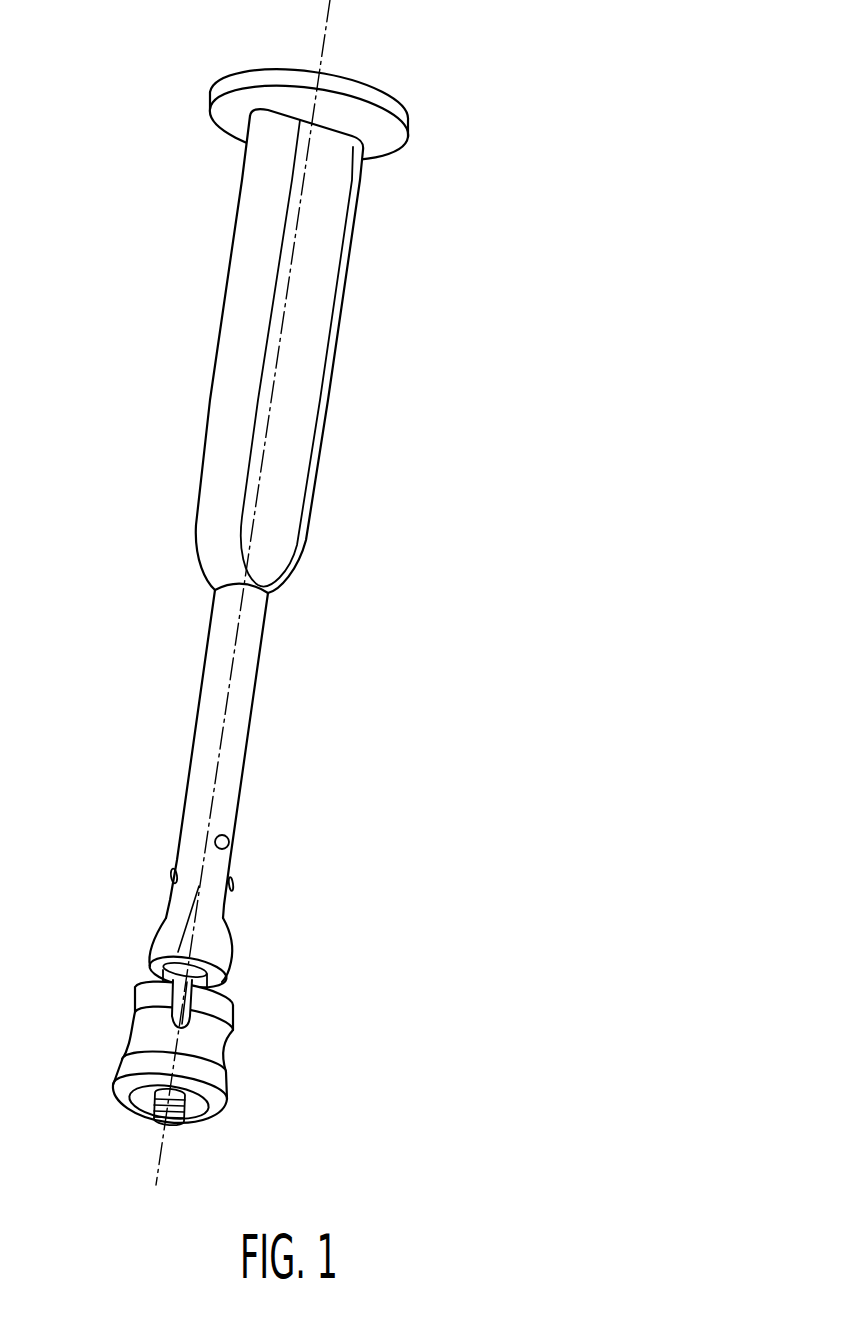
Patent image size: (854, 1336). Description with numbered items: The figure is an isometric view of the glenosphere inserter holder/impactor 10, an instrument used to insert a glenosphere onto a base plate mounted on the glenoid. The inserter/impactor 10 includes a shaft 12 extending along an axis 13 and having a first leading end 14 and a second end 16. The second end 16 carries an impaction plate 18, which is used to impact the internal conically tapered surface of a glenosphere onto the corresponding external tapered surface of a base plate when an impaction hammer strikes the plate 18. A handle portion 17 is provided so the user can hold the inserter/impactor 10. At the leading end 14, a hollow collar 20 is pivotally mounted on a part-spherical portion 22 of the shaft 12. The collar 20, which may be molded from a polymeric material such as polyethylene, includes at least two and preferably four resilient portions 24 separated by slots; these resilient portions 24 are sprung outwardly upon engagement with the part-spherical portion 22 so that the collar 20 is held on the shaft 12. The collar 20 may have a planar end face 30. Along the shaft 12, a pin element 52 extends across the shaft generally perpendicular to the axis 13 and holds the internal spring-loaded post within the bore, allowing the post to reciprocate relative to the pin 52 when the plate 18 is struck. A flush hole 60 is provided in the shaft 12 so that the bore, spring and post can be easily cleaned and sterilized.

The glenosphere inserter holder/impactor 10 is at (275, 592).
The shaft 12 is at (224, 754).
The axis 13 is at (326, 22).
The first leading end 14 is at (226, 960).
The second end 16 is at (403, 111).
The handle portion 17 is at (334, 362).
The impaction plate 18 is at (236, 78).
The hollow collar 20 is at (218, 1093).
The part-spherical portion 22 is at (138, 988).
The resilient portions 24 is at (227, 1008).
The planar end face 30 is at (215, 1110).
The pin element 52 is at (171, 874).
The flush hole 60 is at (229, 838).